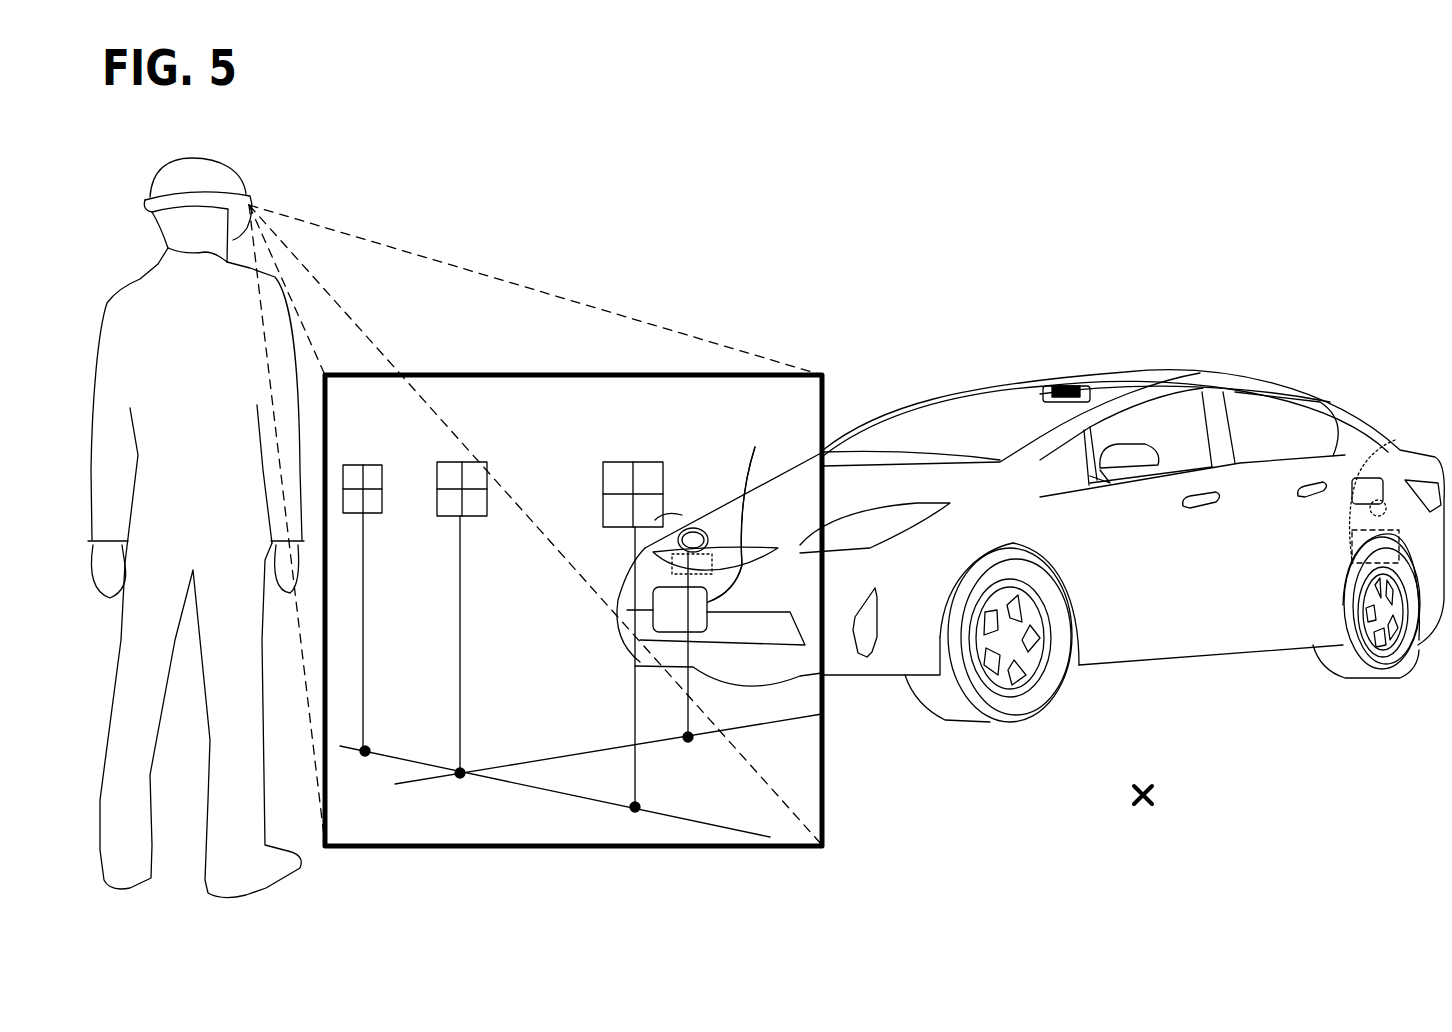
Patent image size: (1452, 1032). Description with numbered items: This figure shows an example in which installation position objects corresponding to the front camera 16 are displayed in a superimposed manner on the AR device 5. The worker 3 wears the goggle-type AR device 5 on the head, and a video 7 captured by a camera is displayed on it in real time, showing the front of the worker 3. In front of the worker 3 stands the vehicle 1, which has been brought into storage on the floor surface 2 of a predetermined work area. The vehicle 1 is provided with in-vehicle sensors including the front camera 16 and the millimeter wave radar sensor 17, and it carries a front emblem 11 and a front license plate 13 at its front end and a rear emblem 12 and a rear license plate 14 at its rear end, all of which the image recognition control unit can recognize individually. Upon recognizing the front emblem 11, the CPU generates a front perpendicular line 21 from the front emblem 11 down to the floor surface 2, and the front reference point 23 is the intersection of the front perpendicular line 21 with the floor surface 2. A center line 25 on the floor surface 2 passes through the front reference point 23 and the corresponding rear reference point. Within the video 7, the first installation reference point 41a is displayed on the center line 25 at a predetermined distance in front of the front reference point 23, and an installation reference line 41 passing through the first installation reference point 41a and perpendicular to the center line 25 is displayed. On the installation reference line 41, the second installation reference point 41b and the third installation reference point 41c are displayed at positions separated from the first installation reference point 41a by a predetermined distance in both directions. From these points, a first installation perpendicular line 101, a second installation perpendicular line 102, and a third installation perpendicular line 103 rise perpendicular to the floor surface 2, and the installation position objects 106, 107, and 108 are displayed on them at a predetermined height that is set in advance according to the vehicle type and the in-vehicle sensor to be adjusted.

The vehicle 1 is at (1200, 368).
The floor surface 2 is at (1153, 797).
The worker 3 is at (142, 278).
The AR device 5 is at (250, 200).
The video 7 is at (505, 375).
The front emblem 11 is at (692, 527).
The rear emblem 12 is at (1383, 500).
The front license plate 13 is at (745, 500).
The rear license plate 14 is at (1368, 440).
The front camera 16 is at (1030, 385).
The millimeter wave radar sensor 17 is at (713, 548).
The front perpendicular line 21 is at (688, 728).
The front reference point 23 is at (690, 744).
The center line 25 is at (767, 733).
The installation reference line 41 is at (512, 785).
The first installation reference point 41a is at (460, 779).
The second installation reference point 41b is at (365, 758).
The third installation reference point 41c is at (635, 809).
The first installation perpendicular line 101 is at (365, 642).
The second installation perpendicular line 102 is at (462, 600).
The third installation perpendicular line 103 is at (634, 700).
The installation position object 106 is at (362, 464).
The installation position object 107 is at (443, 463).
The installation position object 108 is at (618, 462).